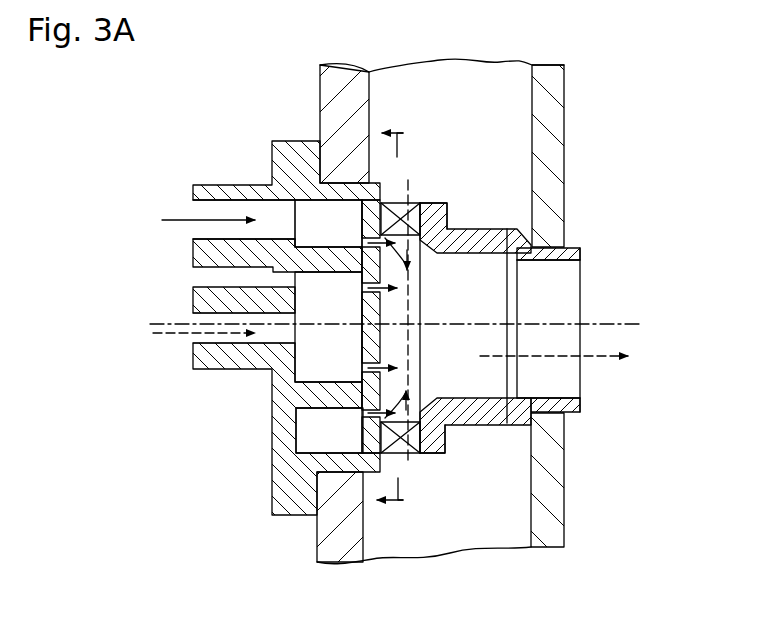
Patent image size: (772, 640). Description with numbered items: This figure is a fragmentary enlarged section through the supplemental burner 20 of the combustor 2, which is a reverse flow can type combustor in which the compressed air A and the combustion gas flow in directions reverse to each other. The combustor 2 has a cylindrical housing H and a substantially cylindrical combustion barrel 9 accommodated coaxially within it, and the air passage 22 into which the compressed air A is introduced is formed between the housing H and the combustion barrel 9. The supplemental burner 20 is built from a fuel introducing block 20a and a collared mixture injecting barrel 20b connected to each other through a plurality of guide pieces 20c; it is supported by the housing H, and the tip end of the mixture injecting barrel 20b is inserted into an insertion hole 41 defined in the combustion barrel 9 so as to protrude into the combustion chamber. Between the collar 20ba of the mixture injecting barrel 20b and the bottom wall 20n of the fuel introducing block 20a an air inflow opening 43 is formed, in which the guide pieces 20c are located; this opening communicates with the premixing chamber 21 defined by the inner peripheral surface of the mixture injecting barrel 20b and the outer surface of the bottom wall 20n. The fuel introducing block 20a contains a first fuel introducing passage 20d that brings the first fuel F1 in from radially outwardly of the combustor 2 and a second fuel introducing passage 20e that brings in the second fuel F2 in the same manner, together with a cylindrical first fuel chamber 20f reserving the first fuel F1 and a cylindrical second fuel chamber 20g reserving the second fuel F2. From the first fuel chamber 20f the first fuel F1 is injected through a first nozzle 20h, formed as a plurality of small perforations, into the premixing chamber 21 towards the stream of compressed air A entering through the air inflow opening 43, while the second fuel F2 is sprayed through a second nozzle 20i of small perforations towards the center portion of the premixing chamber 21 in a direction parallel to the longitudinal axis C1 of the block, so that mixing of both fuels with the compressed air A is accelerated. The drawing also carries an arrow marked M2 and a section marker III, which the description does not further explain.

The combustor 2 is at (262, 508).
The combustion barrel 9 is at (566, 125).
The supplemental burner 20 is at (261, 332).
The fuel introducing block 20a is at (272, 430).
The mixture injecting barrel 20b is at (490, 232).
The collar 20ba is at (450, 212).
The guide pieces 20c is at (393, 197).
The first fuel introducing passage 20d is at (232, 240).
The second fuel introducing passage 20e is at (262, 337).
The first fuel chamber 20f is at (318, 445).
The second fuel chamber 20g is at (295, 377).
The first nozzle 20h is at (378, 243).
The second nozzle 20i is at (378, 288).
The bottom wall 20n is at (192, 317).
The premixing chamber 21 is at (398, 331).
The air passage 22 is at (488, 522).
The insertion hole 41 is at (563, 413).
The air inflow opening 43 is at (400, 463).
The housing H is at (337, 97).
The first fuel F1 is at (173, 220).
The second fuel F2 is at (173, 335).
The longitudinal axis C1 is at (612, 322).
The rotation/feed direction M2 is at (590, 360).
The compressed air A is at (410, 182).
The section line III- III is at (388, 321).